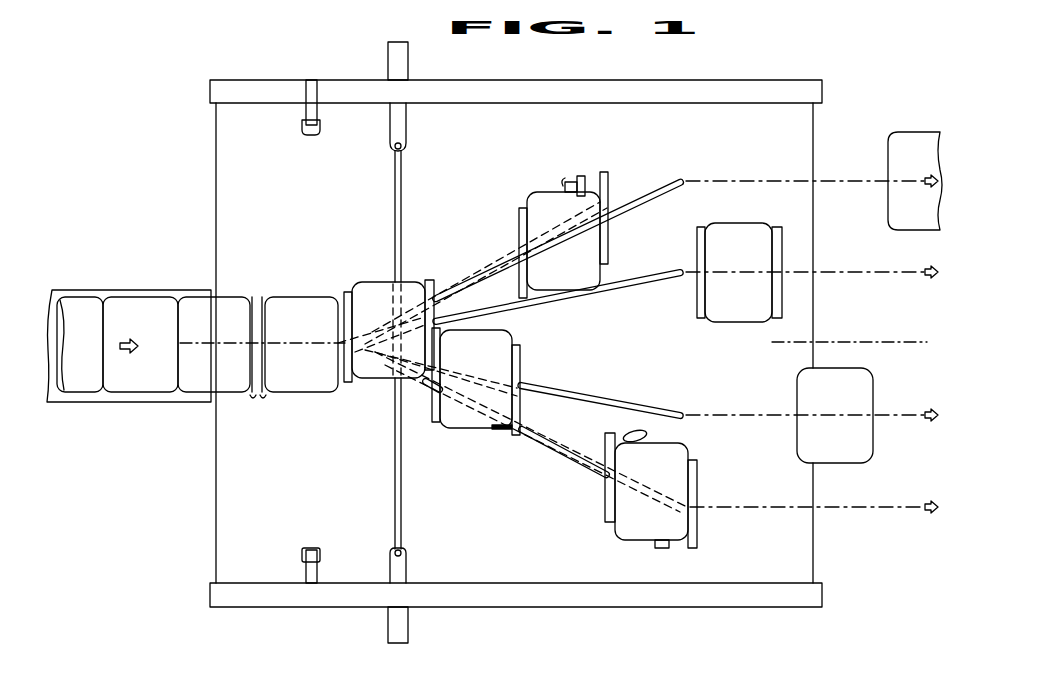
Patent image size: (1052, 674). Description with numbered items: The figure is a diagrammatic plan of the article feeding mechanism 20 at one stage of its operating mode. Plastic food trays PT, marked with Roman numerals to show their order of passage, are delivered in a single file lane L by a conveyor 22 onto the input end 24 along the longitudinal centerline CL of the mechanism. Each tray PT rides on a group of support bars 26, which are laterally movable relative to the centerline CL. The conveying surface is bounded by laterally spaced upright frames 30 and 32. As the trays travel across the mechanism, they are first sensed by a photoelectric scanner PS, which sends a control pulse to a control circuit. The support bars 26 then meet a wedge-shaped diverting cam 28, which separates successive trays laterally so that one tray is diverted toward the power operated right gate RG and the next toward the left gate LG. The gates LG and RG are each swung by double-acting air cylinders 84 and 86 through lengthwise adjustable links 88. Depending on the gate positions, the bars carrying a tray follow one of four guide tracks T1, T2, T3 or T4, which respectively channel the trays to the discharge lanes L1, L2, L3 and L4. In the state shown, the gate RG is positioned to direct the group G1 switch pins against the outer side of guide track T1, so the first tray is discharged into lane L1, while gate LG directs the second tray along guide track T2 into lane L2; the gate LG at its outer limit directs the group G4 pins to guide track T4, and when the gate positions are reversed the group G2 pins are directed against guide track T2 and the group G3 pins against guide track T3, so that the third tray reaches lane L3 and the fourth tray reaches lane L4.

The article feeding mechanism 20 is at (230, 72).
The conveyor 22 is at (130, 288).
The input end 24 is at (212, 422).
The support bars 26 is at (262, 400).
The wedge-shaped diverting cam 28 is at (334, 348).
The upright frame 30 is at (517, 86).
The upright frame 32 is at (652, 603).
The double-acting air cylinder 84 is at (388, 52).
The double-acting air cylinder 86 is at (408, 628).
The lengthwise adjustable link 88 is at (392, 174).
The photoelectric scanner PS is at (302, 128).
The plastic food tray PT is at (283, 300).
The single file lane L is at (46, 305).
The longitudinal centerline CL is at (236, 352).
The left gate LG is at (380, 332).
The right gate RG is at (380, 382).
The group G1 switch pins G1 is at (525, 446).
The group G2 switch pins G2 is at (783, 218).
The group G3 switch pins G3 is at (705, 553).
The group G4 switch pins G4 is at (608, 305).
The guide track T1 is at (642, 410).
The guide track T2 is at (644, 282).
The guide track T3 is at (586, 470).
The guide track T4 is at (667, 186).
The discharge lane L1 is at (932, 425).
The discharge lane L2 is at (936, 282).
The discharge lane L3 is at (932, 518).
The discharge lane L4 is at (930, 194).